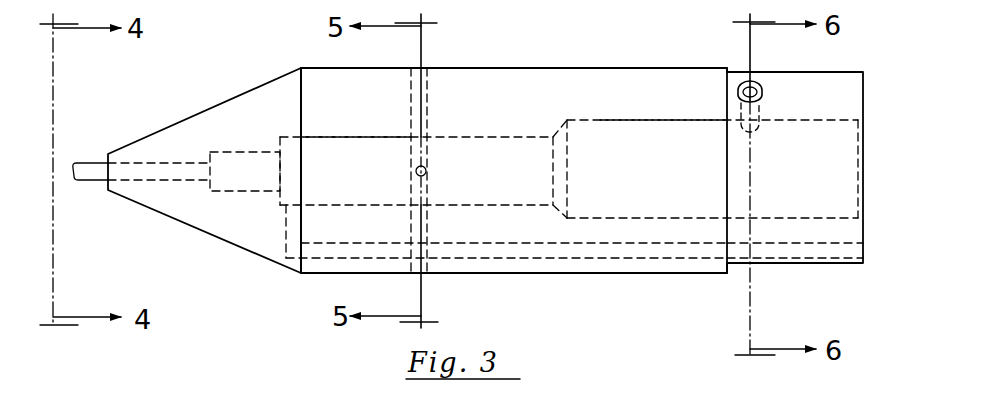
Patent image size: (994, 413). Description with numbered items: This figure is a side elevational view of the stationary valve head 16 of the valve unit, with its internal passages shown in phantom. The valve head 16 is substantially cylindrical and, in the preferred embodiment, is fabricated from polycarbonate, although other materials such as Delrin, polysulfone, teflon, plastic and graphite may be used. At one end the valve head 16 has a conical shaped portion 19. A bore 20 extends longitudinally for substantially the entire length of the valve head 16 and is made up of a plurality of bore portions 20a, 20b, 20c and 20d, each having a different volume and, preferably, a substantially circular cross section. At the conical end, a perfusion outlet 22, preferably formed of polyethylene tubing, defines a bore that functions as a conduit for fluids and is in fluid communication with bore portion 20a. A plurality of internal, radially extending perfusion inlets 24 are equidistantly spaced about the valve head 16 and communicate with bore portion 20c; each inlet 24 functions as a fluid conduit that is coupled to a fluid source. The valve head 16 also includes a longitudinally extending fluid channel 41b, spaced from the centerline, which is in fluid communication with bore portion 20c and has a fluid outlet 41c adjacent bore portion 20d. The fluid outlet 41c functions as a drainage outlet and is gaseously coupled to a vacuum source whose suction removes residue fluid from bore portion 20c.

The valve head 16 is at (600, 68).
The conical shaped portion 19 is at (220, 104).
The bore 20 is at (485, 136).
The bore portion 20a is at (172, 178).
The bore portion 20b is at (230, 192).
The bore portion 20c is at (379, 137).
The bore portion 20d is at (673, 122).
The perfusion outlet 22 is at (95, 170).
The perfusion inlets 24 is at (424, 81).
The fluid channel 41b is at (515, 252).
The fluid outlet 41c is at (863, 248).